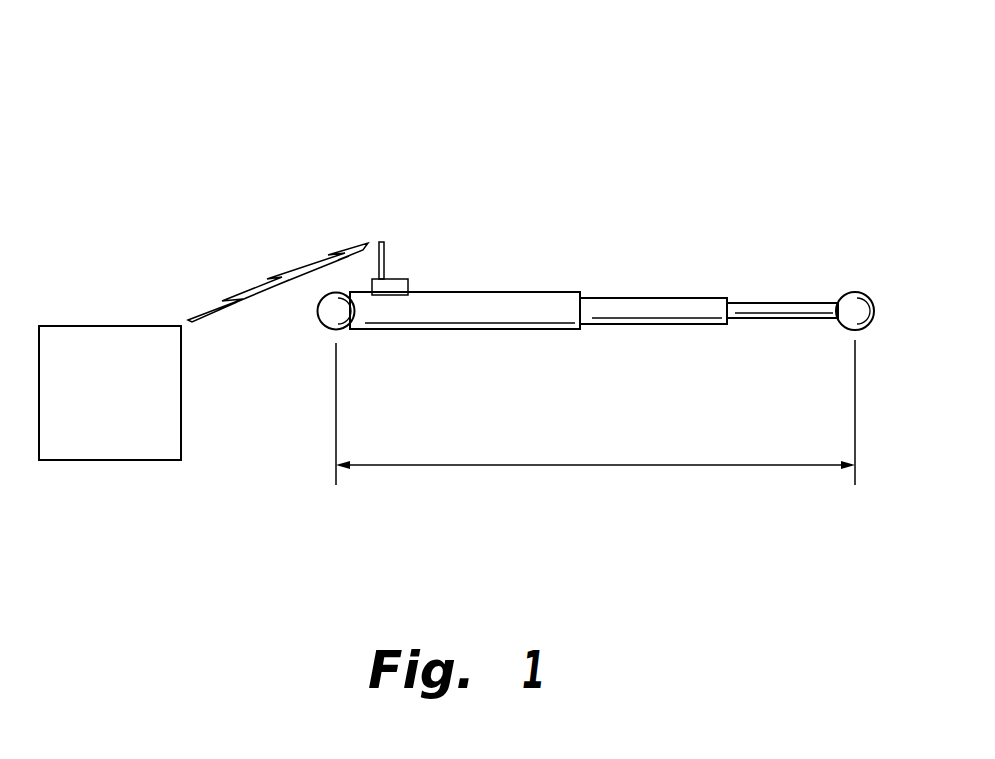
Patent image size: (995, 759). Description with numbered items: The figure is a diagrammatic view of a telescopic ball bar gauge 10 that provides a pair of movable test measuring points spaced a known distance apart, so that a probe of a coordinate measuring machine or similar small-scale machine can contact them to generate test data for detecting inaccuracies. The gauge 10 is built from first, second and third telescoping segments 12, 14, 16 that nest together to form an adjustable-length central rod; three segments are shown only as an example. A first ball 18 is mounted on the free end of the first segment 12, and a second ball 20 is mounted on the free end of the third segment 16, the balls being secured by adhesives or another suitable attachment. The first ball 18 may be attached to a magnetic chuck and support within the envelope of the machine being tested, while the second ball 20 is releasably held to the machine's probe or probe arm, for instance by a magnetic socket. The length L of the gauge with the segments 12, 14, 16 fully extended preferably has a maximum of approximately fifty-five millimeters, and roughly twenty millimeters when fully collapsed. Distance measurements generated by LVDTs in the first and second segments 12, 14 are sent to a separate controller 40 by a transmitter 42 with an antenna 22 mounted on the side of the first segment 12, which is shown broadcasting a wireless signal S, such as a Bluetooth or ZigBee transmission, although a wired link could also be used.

The telescopic ball bar gauge 10 is at (604, 100).
The first telescoping segment 12 is at (462, 330).
The second telescoping segment 14 is at (644, 325).
The third telescoping segment 16 is at (779, 320).
The first ball 18 is at (322, 318).
The second ball 20 is at (845, 290).
The antenna 22 is at (384, 242).
The transmitter 42 is at (409, 278).
The controller 40 is at (138, 462).
The wireless signal S is at (279, 275).
The length L is at (598, 466).